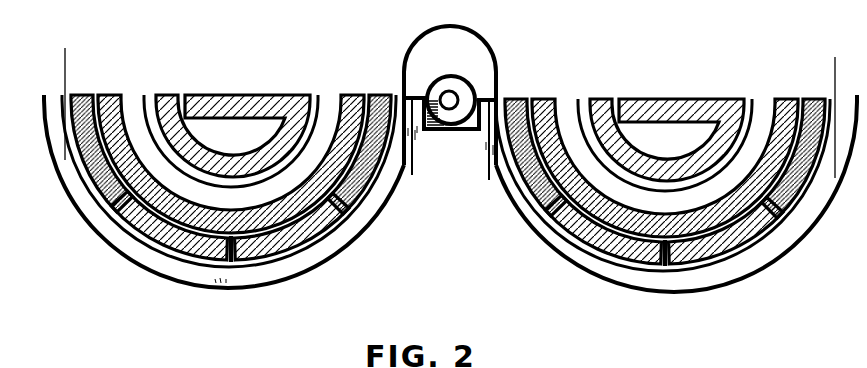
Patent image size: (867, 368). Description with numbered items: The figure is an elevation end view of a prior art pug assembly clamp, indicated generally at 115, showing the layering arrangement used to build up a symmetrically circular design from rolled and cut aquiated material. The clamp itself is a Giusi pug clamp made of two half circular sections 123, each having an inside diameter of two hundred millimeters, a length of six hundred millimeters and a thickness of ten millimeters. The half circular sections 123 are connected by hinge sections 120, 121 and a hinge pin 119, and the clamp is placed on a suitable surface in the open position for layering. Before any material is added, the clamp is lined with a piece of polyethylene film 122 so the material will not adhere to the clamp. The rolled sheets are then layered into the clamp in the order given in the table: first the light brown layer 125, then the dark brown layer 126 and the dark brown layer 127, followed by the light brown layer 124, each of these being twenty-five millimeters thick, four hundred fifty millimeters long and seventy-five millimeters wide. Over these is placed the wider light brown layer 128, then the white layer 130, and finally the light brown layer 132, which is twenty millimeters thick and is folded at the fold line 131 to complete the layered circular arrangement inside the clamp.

The pug clamp design 115 is at (433, 324).
The hinge pin 119 is at (457, 131).
The hinge section 120 is at (482, 135).
The hinge section 121 is at (437, 84).
The polyethylene film 122 is at (414, 44).
The half circular section 123 is at (255, 285).
The light brown layer 124 is at (378, 198).
The light brown layer 125 is at (148, 253).
The dark brown layer 126 is at (309, 260).
The dark brown layer 127 is at (92, 182).
The light brown layer 128 is at (115, 102).
The white layer 130 is at (139, 105).
The fold line 131 is at (296, 98).
The light brown layer 132 is at (206, 96).